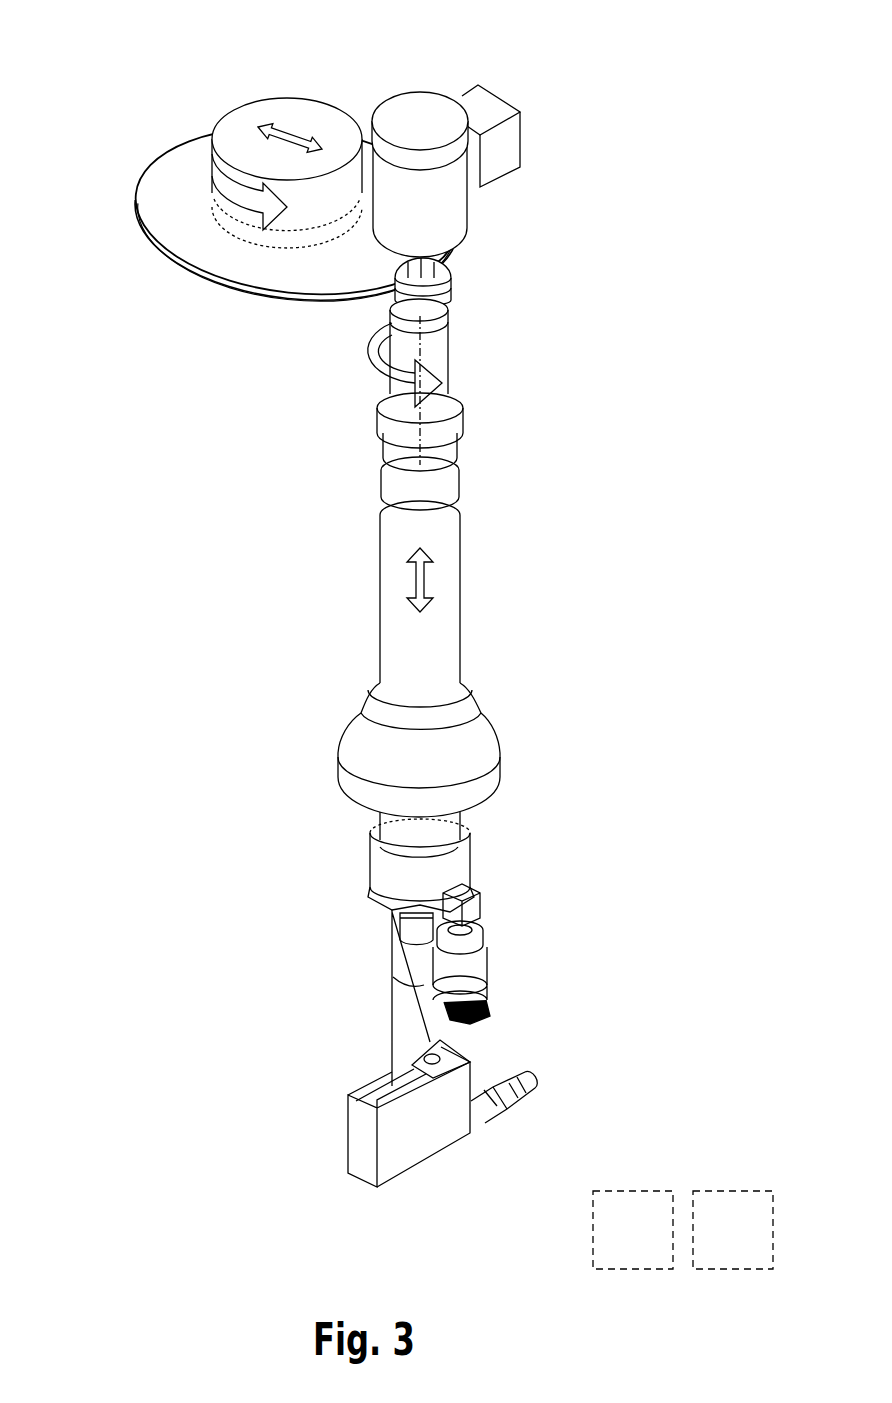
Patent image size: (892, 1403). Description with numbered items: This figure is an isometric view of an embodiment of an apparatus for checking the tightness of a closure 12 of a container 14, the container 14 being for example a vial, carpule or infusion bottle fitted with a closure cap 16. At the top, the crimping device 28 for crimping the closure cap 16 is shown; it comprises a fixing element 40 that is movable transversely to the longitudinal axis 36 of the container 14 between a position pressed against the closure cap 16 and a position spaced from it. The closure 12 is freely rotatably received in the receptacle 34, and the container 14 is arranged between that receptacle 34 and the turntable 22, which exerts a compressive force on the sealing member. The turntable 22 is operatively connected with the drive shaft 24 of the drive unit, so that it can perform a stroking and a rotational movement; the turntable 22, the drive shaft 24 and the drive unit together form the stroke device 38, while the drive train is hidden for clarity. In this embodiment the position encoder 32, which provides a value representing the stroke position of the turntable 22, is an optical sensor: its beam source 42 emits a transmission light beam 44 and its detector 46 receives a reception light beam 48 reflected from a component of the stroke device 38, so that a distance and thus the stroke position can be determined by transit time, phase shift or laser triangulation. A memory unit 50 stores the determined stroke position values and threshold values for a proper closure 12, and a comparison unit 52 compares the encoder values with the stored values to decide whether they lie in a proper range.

The closure 12 is at (467, 299).
The container 14 is at (437, 365).
The closure cap 16 is at (438, 271).
The turntable 22 is at (357, 409).
The drive shaft 24 is at (437, 484).
The crimping device 28 is at (150, 85).
The position encoder 32 is at (324, 1088).
The receptacle 34 is at (437, 232).
The longitudinal axis 36 is at (372, 347).
The stroke device 38 is at (320, 432).
The fixing element 40 is at (184, 250).
The beam source 42 is at (409, 1080).
The transmission light beam 44 is at (392, 1020).
The detector 46 is at (462, 1050).
The reception light beam 48 is at (428, 1031).
The memory unit 50 is at (648, 1244).
The comparison unit 52 is at (748, 1244).